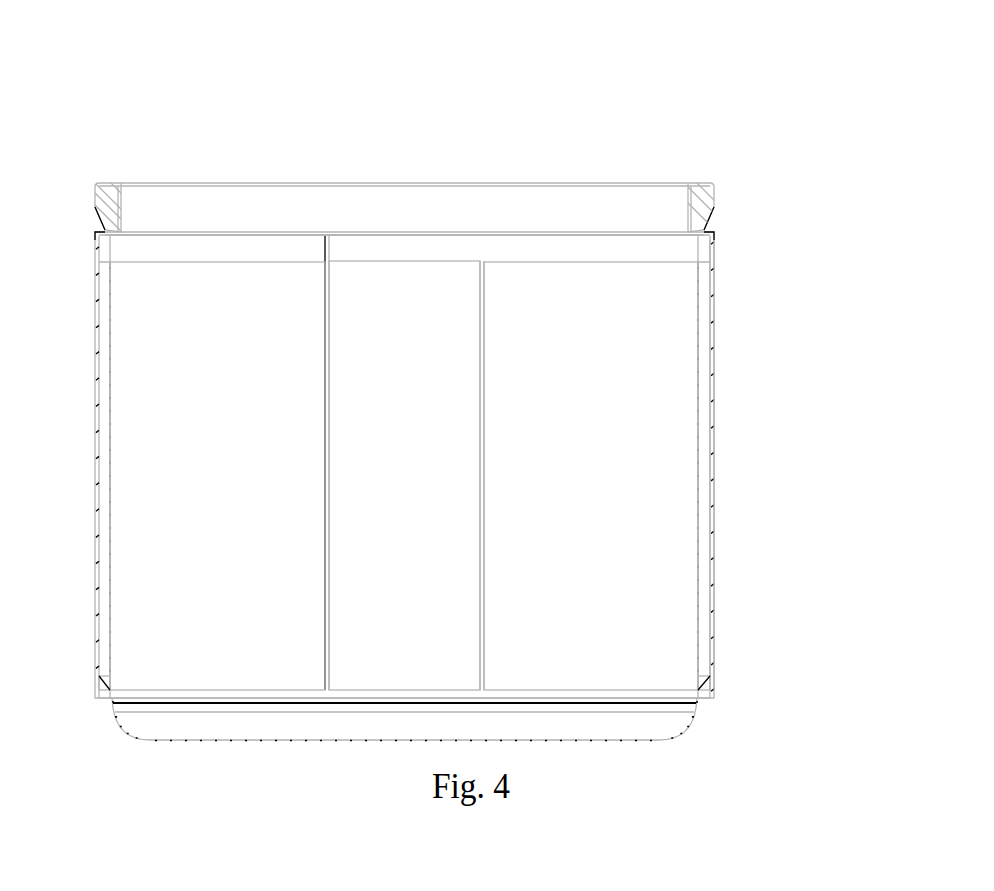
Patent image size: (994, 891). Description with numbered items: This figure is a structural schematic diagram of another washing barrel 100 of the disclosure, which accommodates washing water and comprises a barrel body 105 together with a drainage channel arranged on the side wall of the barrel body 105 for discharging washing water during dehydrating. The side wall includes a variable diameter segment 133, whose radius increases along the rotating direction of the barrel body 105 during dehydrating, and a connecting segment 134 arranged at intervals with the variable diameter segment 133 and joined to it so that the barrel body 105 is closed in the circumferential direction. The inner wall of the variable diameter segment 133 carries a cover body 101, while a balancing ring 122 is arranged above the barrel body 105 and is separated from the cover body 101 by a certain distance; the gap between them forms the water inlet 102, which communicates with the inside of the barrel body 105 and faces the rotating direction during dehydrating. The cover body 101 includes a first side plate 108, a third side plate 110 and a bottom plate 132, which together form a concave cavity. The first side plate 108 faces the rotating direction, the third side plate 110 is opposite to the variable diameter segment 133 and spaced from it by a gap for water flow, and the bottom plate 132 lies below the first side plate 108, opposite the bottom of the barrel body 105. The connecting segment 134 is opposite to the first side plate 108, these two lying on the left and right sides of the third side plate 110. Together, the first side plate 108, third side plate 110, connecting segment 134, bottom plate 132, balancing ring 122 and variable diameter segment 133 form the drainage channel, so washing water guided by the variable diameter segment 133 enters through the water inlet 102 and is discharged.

The washing barrel 100 is at (743, 298).
The cover body 101 is at (506, 311).
The water inlet 102 is at (478, 232).
The barrel body 105 is at (721, 412).
The first side plate 108 is at (490, 270).
The third side plate 110 is at (454, 512).
The balancing ring 122 is at (390, 189).
The bottom plate 132 is at (714, 670).
The variable diameter segment 133 is at (211, 337).
The connecting segment 134 is at (325, 237).